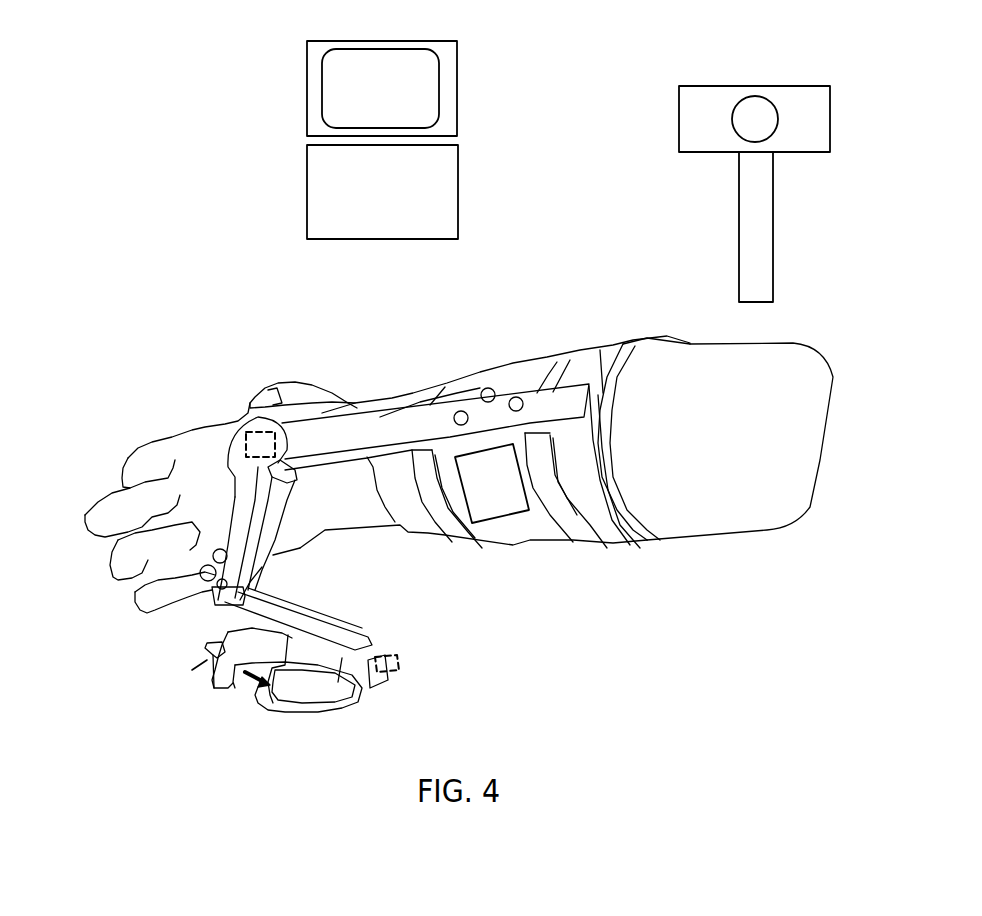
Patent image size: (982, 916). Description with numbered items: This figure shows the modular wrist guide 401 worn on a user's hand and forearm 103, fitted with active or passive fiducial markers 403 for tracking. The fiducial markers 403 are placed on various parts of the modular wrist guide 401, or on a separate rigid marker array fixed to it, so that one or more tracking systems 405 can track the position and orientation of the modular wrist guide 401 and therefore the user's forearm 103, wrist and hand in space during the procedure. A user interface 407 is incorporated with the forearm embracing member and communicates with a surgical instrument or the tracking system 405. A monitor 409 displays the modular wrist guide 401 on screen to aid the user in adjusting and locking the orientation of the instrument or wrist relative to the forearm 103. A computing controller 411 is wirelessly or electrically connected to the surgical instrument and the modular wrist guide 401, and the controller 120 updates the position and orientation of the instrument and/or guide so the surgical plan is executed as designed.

The modular wrist guide 401 is at (187, 331).
The fiducial markers 403 is at (461, 418).
The tracking system 405 is at (679, 110).
The user interface 407 is at (507, 513).
The monitor 409 is at (307, 63).
The computing controller 411 is at (307, 163).
The controller 120 is at (243, 434).
The forearm 103 is at (766, 532).